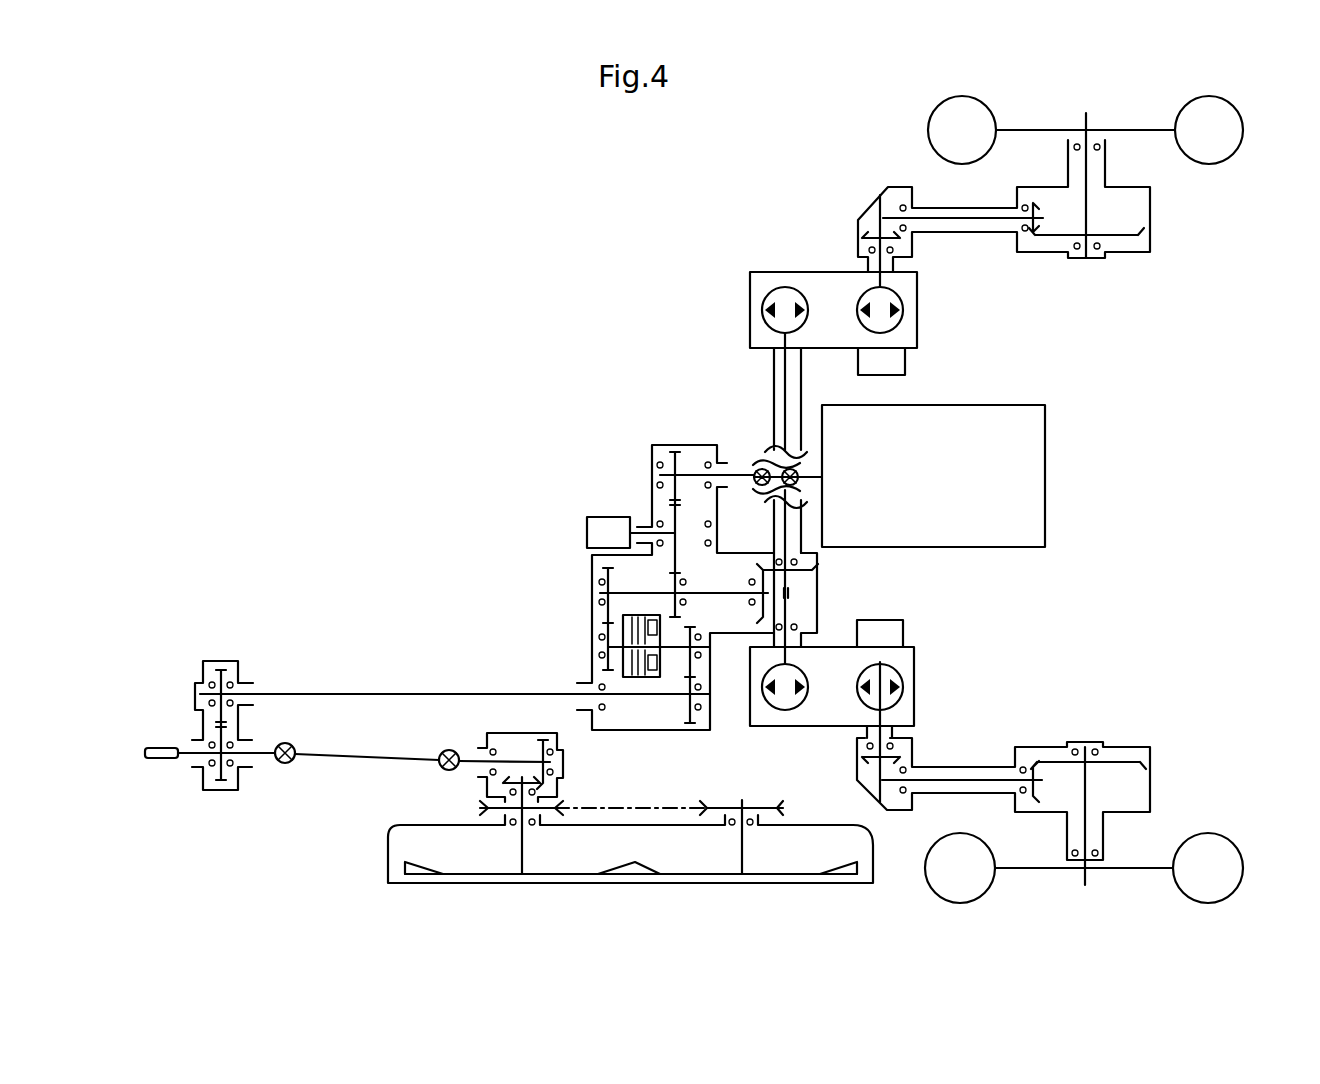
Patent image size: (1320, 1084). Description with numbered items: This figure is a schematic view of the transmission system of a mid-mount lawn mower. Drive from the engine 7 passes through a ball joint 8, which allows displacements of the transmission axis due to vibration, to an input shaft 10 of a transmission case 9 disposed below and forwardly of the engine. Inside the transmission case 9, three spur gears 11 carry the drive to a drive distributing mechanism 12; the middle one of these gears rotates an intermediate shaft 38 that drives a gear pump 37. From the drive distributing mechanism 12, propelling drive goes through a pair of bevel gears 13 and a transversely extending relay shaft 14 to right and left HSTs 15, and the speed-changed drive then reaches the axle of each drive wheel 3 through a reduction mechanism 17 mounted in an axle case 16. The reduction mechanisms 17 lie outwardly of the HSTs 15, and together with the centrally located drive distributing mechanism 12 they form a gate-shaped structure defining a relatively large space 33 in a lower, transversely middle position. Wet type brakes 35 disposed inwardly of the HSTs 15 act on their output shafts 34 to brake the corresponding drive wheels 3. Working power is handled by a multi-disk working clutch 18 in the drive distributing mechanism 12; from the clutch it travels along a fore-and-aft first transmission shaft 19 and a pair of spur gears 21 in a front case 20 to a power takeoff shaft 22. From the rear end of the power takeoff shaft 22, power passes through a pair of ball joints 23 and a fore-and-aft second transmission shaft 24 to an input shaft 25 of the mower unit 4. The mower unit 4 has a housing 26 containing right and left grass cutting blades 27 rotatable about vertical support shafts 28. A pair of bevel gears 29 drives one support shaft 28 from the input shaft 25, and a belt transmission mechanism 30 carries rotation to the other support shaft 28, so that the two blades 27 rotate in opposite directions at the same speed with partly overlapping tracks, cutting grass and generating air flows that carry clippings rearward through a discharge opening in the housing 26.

The drive wheels 3 is at (948, 130).
The mower unit 4 is at (579, 822).
The engine 7 is at (1035, 443).
The ball joint 8 is at (755, 462).
The transmission case 9 is at (590, 618).
The input shaft 10 is at (730, 462).
The spur gears 11 is at (672, 462).
The drive distributing mechanism 12 is at (631, 578).
The bevel gears 13 is at (795, 610).
The relay shaft 14 is at (780, 383).
The HSTs 15 is at (854, 491).
The axle case 16 is at (968, 237).
The reduction mechanism 17 is at (1125, 224).
The working clutch 18 is at (641, 677).
The first transmission shaft 19 is at (343, 693).
The front case 20 is at (218, 679).
The spur gears 21 is at (225, 733).
The power takeoff shaft 22 is at (265, 756).
The ball joints 23 is at (285, 765).
The second transmission shaft 24 is at (350, 760).
The input shaft 25 is at (453, 752).
The housing 26 is at (820, 825).
The grass cutting blades 27 is at (417, 862).
The support shafts 28 is at (525, 847).
The bevel gears 29 is at (528, 755).
The belt transmission mechanism 30 is at (657, 807).
The space 33 is at (1061, 358).
The output shafts 34 is at (877, 347).
The wet type brakes 35 is at (892, 367).
The gear pump 37 is at (595, 522).
The intermediate shaft 38 is at (637, 527).